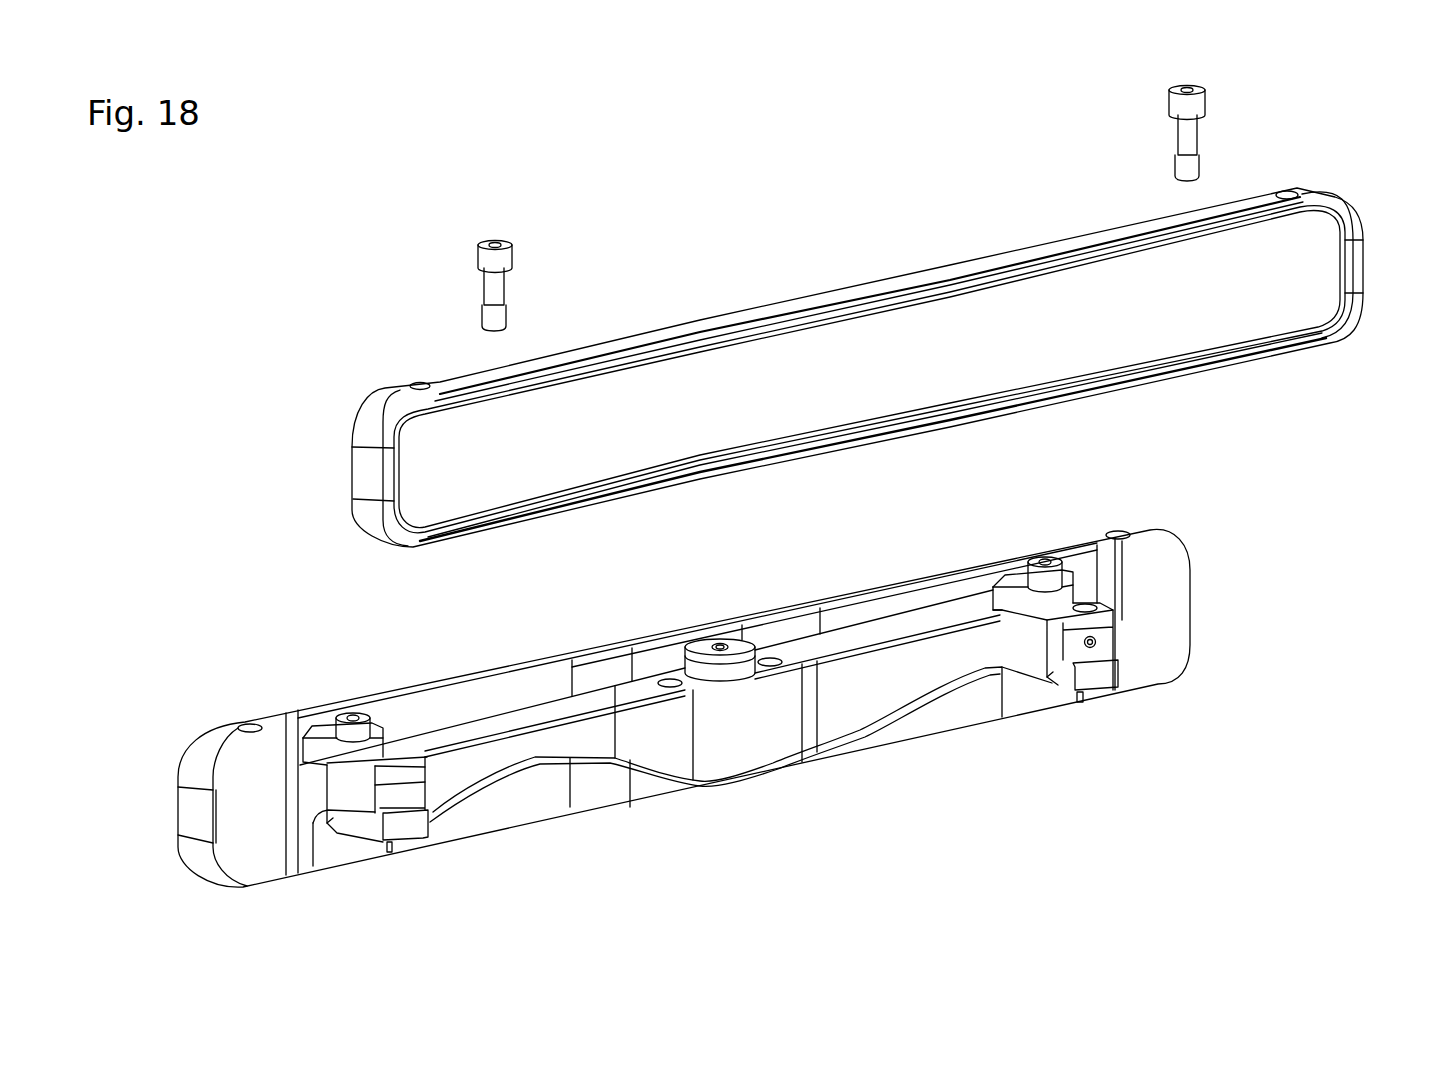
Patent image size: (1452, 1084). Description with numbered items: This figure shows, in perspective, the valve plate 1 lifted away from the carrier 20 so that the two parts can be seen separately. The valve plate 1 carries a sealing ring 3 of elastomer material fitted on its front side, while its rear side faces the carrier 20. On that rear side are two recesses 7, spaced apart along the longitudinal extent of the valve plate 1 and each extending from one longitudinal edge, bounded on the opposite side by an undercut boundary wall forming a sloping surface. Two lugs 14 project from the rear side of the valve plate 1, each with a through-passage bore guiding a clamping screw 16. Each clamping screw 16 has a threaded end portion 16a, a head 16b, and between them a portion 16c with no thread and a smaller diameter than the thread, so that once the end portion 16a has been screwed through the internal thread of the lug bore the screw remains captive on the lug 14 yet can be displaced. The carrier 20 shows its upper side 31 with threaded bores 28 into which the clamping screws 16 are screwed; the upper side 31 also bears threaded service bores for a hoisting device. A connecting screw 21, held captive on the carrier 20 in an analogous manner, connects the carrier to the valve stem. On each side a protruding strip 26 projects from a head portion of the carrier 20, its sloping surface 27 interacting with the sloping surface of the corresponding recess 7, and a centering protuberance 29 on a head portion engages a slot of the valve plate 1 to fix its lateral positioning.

The valve plate 1 is at (902, 367).
The sealing ring 3 is at (1350, 330).
The recess 7 is at (328, 852).
The lug 14 is at (333, 748).
The clamping screw 16 is at (514, 218).
The end portion 16a is at (1187, 167).
The head 16b is at (1192, 105).
The portion with no thread 16c is at (1188, 135).
The carrier 20 is at (748, 729).
The connecting screw 21 is at (728, 670).
The protruding strip 26 is at (410, 827).
The sloping surface 27 is at (380, 827).
The threaded bore 28 is at (1078, 607).
The centering protuberance 29 is at (1095, 644).
The upper side 31 is at (482, 732).